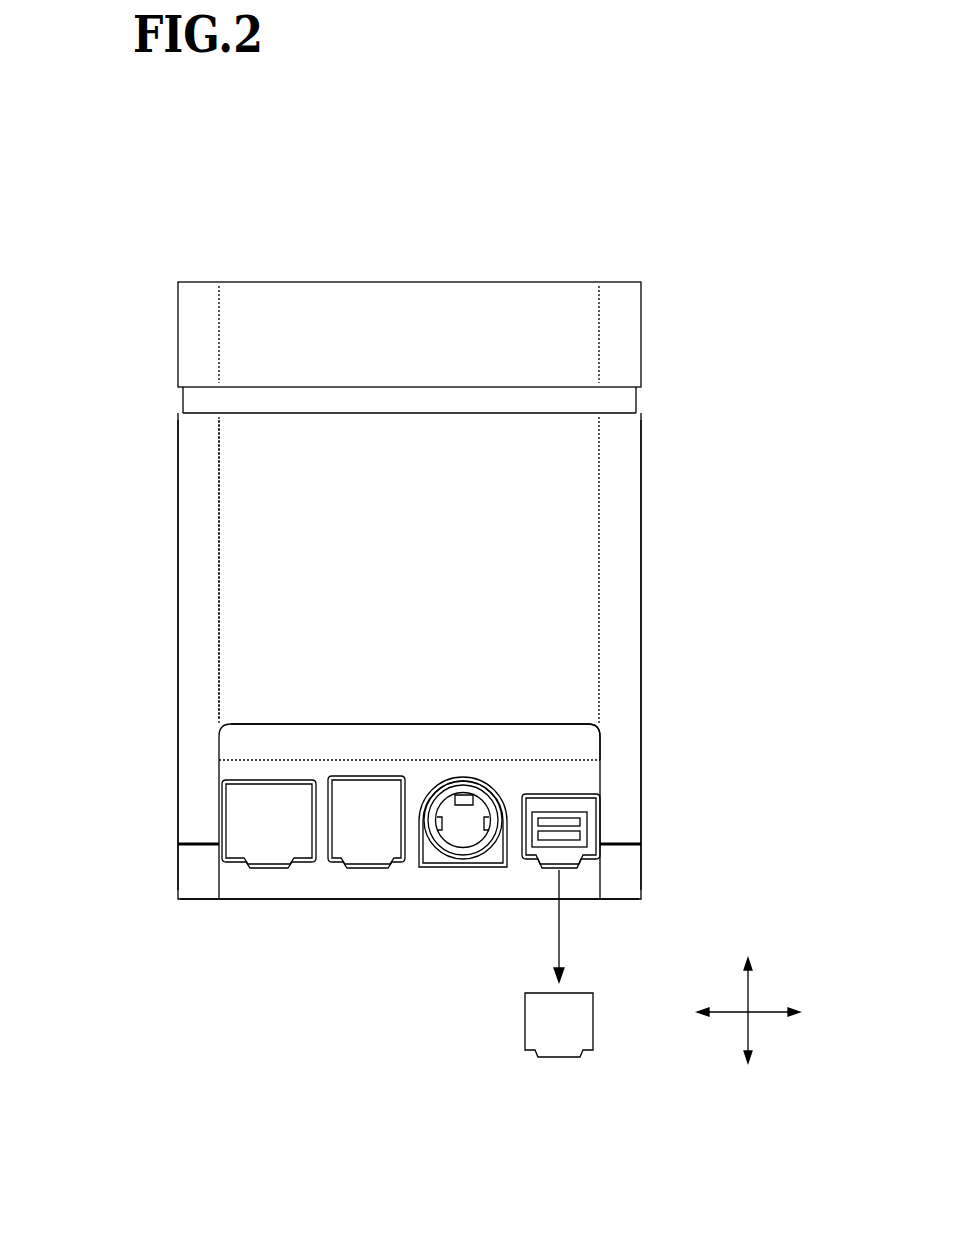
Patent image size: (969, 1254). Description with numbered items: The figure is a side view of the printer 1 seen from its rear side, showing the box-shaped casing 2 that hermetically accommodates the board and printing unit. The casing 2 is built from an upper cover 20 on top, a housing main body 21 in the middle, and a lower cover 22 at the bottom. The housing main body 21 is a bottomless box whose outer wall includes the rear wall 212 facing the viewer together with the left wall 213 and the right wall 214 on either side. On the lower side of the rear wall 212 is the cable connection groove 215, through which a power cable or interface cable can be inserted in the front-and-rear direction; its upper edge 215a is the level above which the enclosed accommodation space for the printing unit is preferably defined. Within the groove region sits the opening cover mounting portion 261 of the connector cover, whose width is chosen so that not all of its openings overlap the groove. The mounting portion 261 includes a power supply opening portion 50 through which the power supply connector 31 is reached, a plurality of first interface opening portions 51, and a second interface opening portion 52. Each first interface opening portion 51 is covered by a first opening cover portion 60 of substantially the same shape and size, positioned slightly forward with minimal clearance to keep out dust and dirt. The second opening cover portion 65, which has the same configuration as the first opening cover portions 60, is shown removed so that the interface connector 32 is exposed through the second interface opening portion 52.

The printer 1 is at (196, 218).
The casing 2 is at (747, 390).
The upper cover 20 is at (642, 334).
The housing main body 21 is at (642, 477).
The lower cover 22 is at (632, 873).
The rear wall 212 is at (242, 545).
The left wall 213 is at (178, 475).
The right wall 214 is at (642, 545).
The cable connection groove 215 is at (229, 745).
The upper edge 215a is at (568, 724).
The opening cover mounting portion 261 is at (229, 772).
The power supply connector 31 is at (452, 812).
The interface connector 32 is at (543, 812).
The power supply opening portion 50 is at (475, 828).
The first interface opening portions 51 is at (362, 833).
The second interface opening portion 52 is at (590, 850).
The first opening cover portions 60 is at (368, 810).
The second opening cover portion 65 is at (537, 1025).